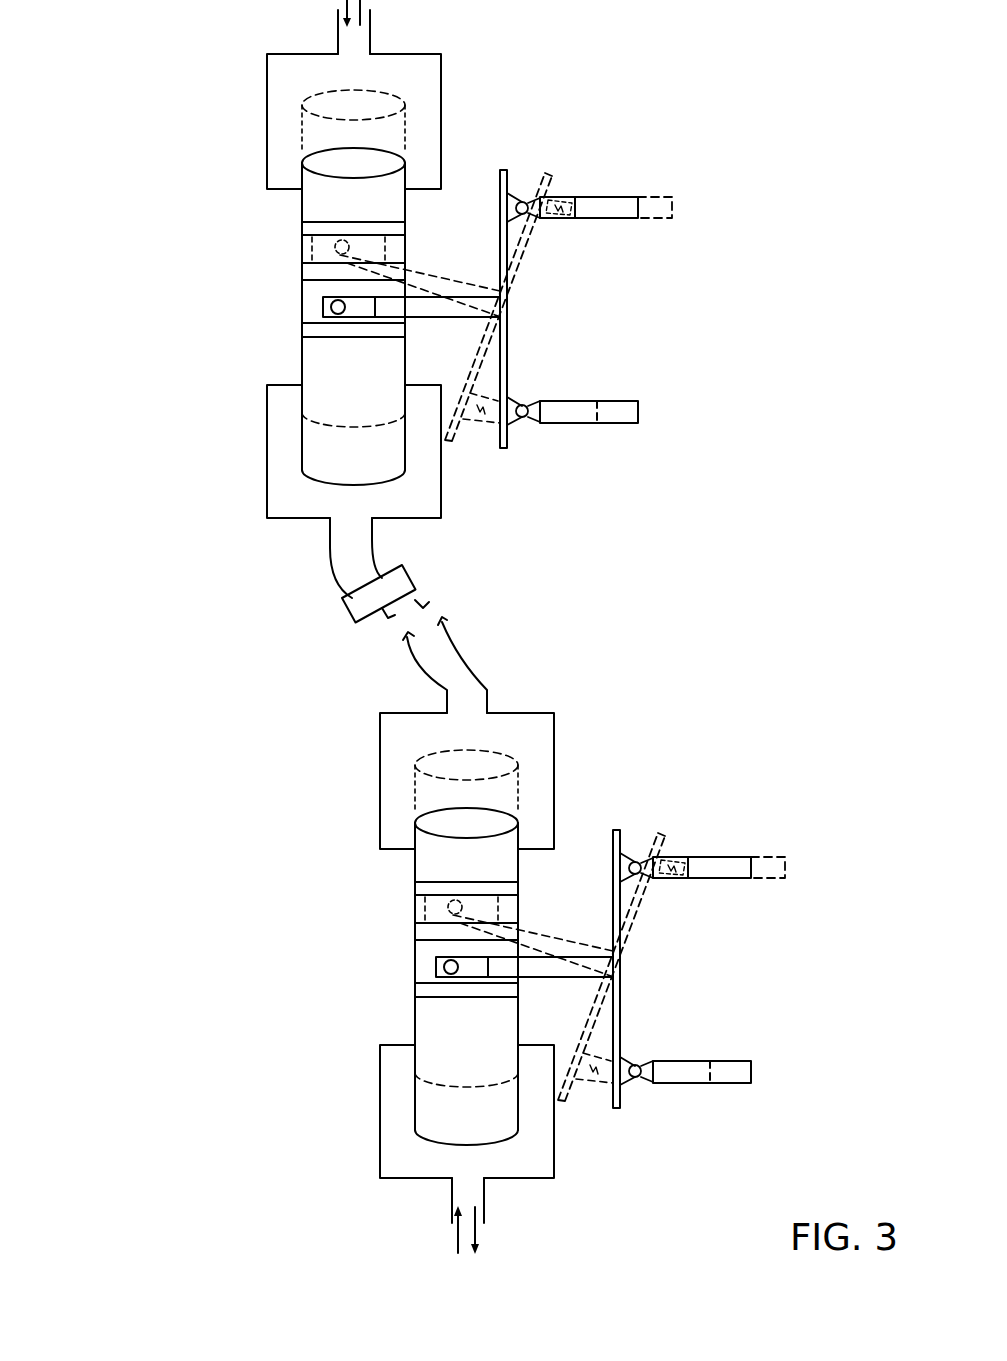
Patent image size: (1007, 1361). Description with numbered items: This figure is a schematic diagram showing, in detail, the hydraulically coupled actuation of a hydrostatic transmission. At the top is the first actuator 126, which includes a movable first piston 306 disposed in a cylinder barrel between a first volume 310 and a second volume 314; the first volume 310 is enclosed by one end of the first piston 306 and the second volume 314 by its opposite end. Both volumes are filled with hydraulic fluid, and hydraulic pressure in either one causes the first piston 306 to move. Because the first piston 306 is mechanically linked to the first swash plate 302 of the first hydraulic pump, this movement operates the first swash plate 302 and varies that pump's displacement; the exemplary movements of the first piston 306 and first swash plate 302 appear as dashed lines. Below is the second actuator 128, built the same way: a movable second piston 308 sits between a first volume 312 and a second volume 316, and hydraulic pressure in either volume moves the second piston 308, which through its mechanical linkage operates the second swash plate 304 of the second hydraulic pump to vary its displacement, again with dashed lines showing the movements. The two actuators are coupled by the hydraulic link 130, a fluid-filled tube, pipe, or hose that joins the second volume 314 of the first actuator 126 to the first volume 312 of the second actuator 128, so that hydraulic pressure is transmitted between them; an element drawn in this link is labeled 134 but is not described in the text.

The first actuator 126 is at (146, 270).
The second actuator 128 is at (151, 930).
The hydraulic link 130 is at (453, 658).
The valve 134 is at (358, 610).
The first swash plate 302 is at (501, 170).
The second swash plate 304 is at (671, 931).
The first piston 306 is at (325, 200).
The second piston 308 is at (453, 947).
The first volume 310 is at (288, 83).
The first volume 312 is at (408, 781).
The second volume 314 is at (288, 493).
The second volume 316 is at (398, 1111).